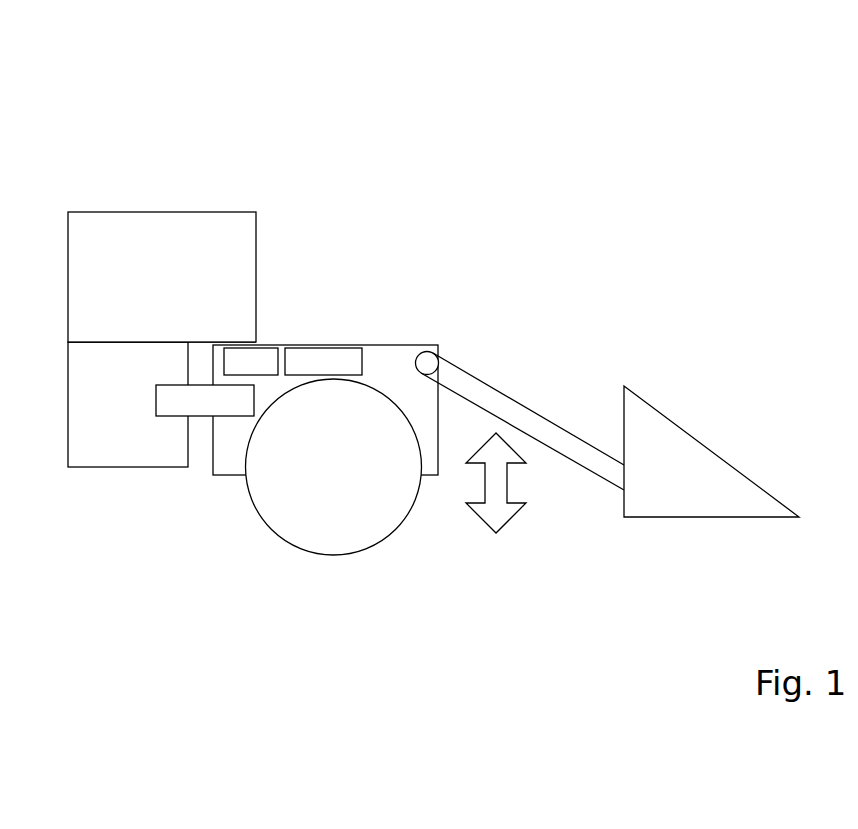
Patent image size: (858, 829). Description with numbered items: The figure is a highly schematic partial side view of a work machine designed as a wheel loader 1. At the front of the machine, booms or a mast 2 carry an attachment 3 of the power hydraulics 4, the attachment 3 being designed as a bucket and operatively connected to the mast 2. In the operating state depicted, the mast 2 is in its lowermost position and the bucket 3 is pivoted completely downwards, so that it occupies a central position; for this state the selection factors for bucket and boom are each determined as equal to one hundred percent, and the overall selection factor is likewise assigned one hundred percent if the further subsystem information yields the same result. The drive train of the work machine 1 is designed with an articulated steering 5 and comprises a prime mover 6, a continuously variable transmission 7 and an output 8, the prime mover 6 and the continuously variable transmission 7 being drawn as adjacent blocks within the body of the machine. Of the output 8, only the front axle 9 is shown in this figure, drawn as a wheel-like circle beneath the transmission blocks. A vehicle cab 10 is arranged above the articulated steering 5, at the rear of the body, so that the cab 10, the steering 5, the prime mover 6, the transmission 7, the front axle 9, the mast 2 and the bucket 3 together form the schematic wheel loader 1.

The wheel loader 1 is at (413, 228).
The mast 2 is at (498, 403).
The attachment 3 is at (658, 443).
The power hydraulics 4 is at (575, 338).
The articulated steering 5 is at (202, 427).
The prime mover 6 is at (300, 344).
The continuously variable transmission 7 is at (266, 344).
The output 8 is at (278, 552).
The front axle 9 is at (357, 512).
The vehicle cab 10 is at (222, 210).